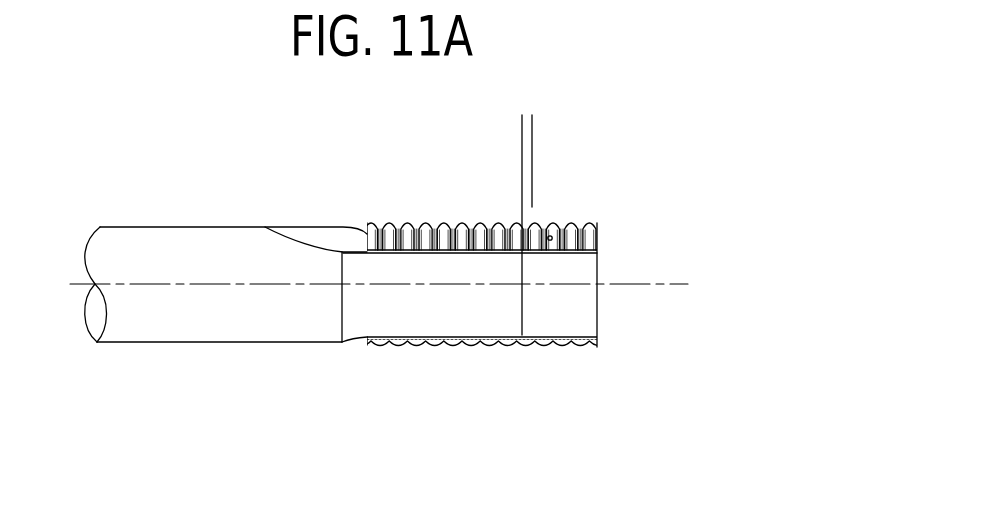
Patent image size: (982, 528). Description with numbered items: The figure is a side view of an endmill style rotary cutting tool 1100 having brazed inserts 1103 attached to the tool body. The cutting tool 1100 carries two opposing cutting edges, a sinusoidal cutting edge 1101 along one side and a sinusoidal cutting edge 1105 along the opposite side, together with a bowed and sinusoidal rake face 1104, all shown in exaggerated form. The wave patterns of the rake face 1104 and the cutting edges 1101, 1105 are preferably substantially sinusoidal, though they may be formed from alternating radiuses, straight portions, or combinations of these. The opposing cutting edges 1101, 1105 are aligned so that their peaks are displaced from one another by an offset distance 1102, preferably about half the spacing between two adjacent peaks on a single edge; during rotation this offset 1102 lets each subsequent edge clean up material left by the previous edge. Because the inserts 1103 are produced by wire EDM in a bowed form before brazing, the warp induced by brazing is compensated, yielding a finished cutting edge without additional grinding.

The rotary cutting tool 1100 is at (152, 148).
The sinusoidal cutting edge 1101 is at (458, 222).
The offset distance 1102 is at (475, 123).
The brazed insert 1103 is at (602, 236).
The rake face 1104 is at (553, 233).
The sinusoidal cutting edge 1105 is at (453, 346).